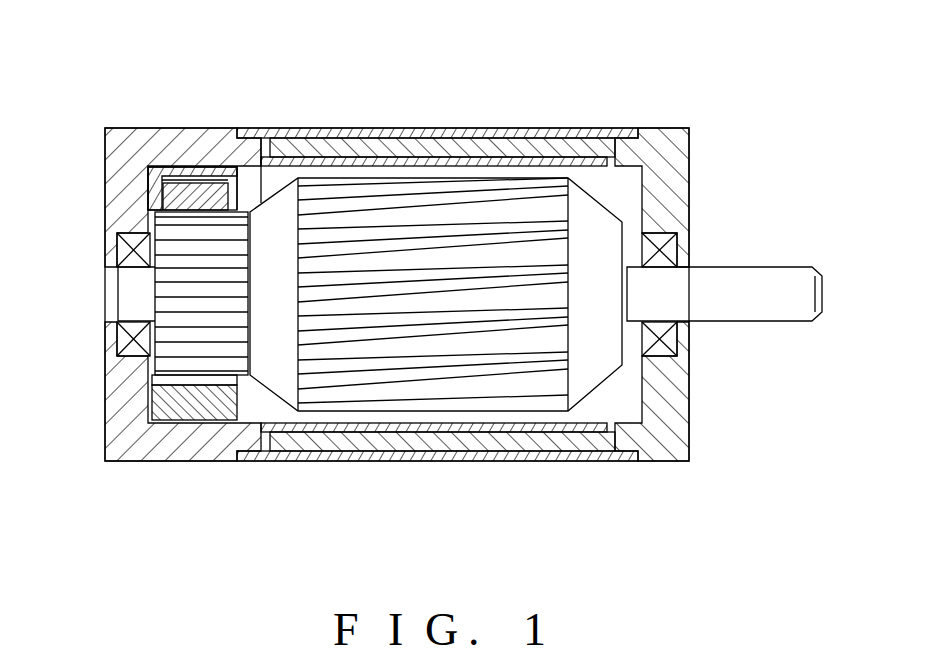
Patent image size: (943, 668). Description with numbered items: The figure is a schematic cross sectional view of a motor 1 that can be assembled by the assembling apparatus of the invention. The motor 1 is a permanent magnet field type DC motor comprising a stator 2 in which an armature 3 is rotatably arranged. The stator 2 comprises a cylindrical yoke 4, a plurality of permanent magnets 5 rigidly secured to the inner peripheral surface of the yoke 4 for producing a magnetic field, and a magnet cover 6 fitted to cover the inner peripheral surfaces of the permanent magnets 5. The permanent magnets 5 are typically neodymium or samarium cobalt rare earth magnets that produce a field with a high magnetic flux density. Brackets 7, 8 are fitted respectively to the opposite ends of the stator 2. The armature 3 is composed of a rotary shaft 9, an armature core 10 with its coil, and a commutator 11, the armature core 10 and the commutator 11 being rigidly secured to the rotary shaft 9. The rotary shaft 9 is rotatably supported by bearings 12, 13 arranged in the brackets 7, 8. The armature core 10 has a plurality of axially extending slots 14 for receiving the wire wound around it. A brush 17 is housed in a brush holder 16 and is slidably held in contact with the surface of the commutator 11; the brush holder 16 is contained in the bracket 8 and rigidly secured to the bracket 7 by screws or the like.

The motor 1 is at (210, 112).
The stator 2 is at (563, 127).
The armature 3 is at (600, 203).
The cylindrical yoke 4 is at (410, 134).
The permanent magnets 5 is at (475, 138).
The magnet cover 6 is at (263, 142).
The bracket 7 is at (125, 142).
The bracket 8 is at (660, 140).
The rotary shaft 9 is at (757, 313).
The armature core 10 is at (585, 379).
The commutator 11 is at (203, 347).
The bearing 12 is at (116, 240).
The bearing 13 is at (670, 249).
The slots 14 is at (350, 372).
The brush holder 16 is at (157, 404).
The brush 17 is at (188, 195).